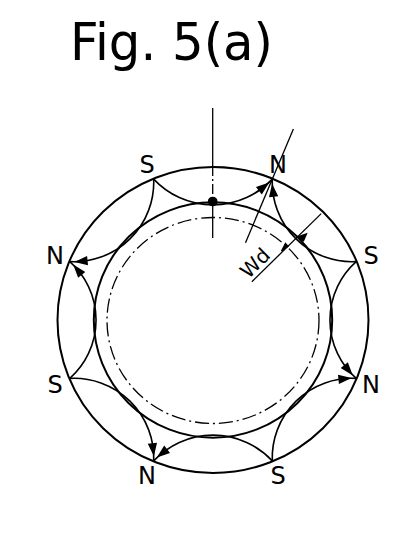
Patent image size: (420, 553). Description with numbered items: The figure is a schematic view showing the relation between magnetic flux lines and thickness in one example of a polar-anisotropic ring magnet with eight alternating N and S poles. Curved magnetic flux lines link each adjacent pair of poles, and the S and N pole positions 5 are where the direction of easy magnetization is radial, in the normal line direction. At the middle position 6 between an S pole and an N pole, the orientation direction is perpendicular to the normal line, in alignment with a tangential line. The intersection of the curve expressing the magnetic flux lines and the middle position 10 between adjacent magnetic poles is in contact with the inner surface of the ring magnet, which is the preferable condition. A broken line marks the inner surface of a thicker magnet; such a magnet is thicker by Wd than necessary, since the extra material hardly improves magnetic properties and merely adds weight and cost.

The pole position 5 is at (275, 173).
The middle position between the magnetic poles 6 is at (212, 161).
The middle position between adjacent magnetic poles 10 is at (211, 203).